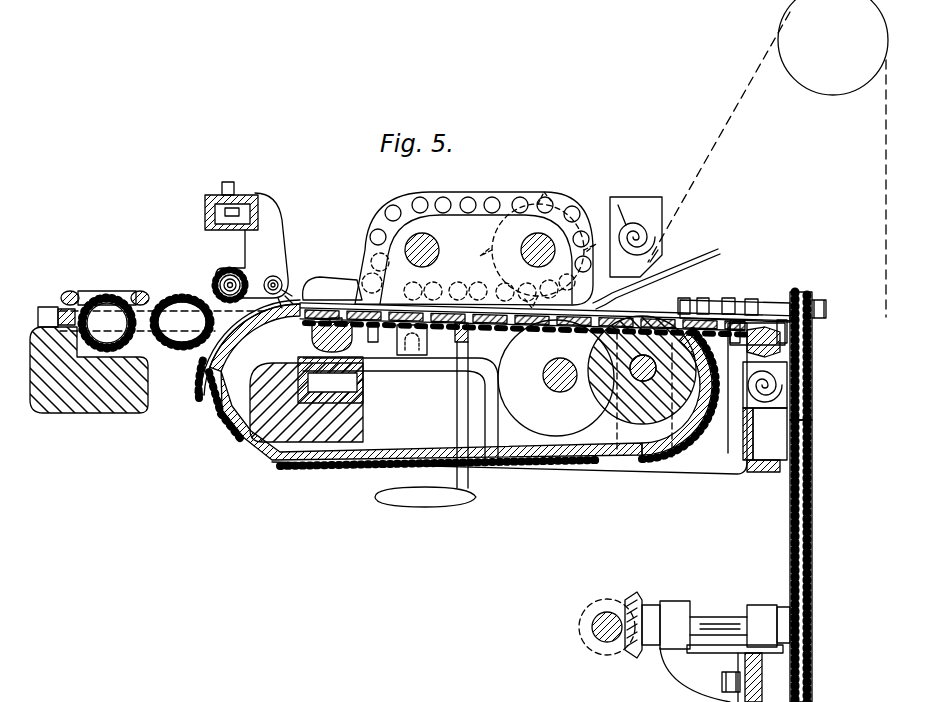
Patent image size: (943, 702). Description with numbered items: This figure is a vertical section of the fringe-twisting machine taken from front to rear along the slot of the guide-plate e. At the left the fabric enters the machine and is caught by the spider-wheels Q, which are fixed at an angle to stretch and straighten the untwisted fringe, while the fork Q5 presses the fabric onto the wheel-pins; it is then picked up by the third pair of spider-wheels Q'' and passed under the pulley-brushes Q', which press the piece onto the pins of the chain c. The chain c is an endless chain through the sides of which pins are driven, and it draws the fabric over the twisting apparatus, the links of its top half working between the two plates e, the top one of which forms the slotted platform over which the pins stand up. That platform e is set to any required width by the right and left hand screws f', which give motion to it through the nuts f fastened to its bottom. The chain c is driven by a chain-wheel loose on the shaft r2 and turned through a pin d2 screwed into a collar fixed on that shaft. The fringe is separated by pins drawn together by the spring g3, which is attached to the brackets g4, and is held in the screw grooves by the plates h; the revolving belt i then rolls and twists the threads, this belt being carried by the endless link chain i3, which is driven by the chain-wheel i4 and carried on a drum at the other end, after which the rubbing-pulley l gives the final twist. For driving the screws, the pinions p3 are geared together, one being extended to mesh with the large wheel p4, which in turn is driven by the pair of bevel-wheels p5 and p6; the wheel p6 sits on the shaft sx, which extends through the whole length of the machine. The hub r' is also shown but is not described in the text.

The revolving rubber or belt i is at (480, 193).
The endless link chain i3 is at (560, 220).
The chain-wheel i4 is at (596, 216).
The spider-wheels Q is at (107, 323).
The fork Q5 is at (80, 297).
The third pair of spider-wheels Q'' is at (249, 245).
The pulley-brushes Q' is at (326, 273).
The plates h is at (338, 298).
The plates or platform e is at (198, 389).
The chain c is at (345, 318).
The pin d2 is at (688, 408).
The nuts f is at (549, 341).
The right and left hand screws f' is at (603, 365).
The brackets g4 is at (370, 345).
The spring g3 is at (378, 336).
The rubbing-pulley or reverse-twister l is at (535, 414).
The wheel hub r' is at (547, 383).
The shaft r2 is at (642, 364).
The pinions p3 is at (812, 300).
The large wheel p4 is at (812, 470).
The bevel-wheel p5 is at (633, 597).
The bevel-wheel p6 is at (578, 622).
The shaft sx is at (597, 642).